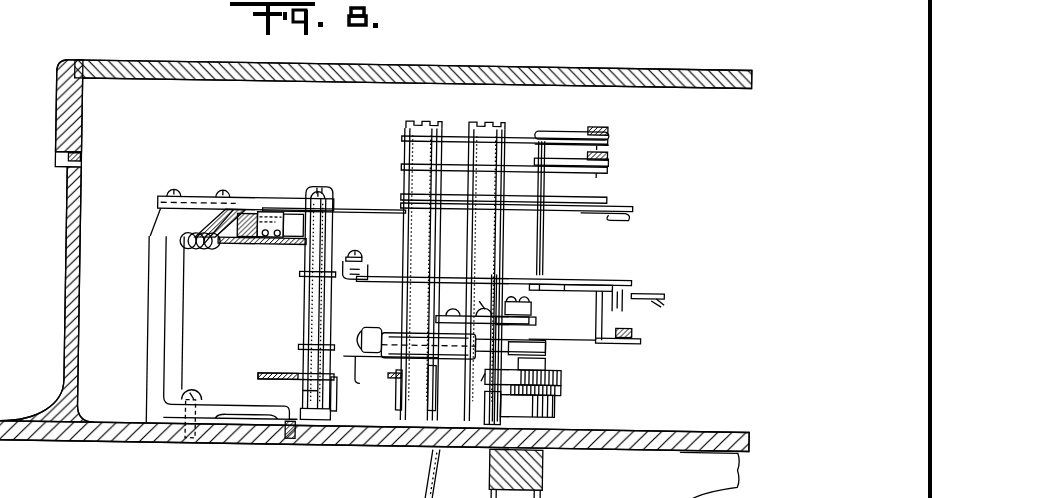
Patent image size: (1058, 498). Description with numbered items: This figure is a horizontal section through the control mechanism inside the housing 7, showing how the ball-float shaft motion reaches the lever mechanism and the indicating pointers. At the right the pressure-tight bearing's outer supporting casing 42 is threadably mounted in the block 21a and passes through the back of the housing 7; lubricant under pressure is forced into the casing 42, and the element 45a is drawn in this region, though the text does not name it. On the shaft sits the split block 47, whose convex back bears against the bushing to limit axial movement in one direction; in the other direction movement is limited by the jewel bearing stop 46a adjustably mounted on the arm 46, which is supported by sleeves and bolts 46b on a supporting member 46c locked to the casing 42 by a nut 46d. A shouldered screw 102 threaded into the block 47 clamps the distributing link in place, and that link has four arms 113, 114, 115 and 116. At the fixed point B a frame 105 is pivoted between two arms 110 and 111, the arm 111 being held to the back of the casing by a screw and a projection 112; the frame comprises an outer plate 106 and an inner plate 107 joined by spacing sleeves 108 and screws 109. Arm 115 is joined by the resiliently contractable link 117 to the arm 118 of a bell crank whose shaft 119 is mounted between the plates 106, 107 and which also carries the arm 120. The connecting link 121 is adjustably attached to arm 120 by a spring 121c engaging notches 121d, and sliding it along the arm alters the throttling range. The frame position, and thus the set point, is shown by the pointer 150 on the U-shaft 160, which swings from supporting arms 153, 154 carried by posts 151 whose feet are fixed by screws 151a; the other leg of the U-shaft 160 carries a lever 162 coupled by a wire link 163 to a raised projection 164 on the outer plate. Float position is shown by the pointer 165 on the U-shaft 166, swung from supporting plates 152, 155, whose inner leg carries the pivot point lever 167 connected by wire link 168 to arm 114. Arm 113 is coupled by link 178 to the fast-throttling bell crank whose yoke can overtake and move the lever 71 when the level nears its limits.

The housing 7 is at (127, 446).
The block 21a is at (432, 479).
The outer supporting casing 42 is at (557, 405).
The contact screw 45a is at (533, 300).
The arm 46 is at (451, 315).
The jewel bearing stop 46a is at (487, 374).
The bolts 46b is at (496, 300).
The supporting member 46c is at (563, 389).
The nut 46d is at (563, 377).
The split block 47 is at (547, 362).
The lever 71 is at (389, 380).
The screw 102 is at (537, 320).
The frame 105 is at (228, 252).
The outer plate 106 is at (287, 242).
The inner plate 107 is at (276, 373).
The spacing sleeves 108 is at (300, 277).
The screws 109 is at (315, 188).
The arm 110 is at (258, 200).
The arm 111 is at (211, 402).
The projection 112 is at (294, 441).
The arm 113 is at (636, 341).
The arm 114 is at (619, 308).
The arm 115 is at (547, 347).
The arm 116 is at (401, 333).
The resilient link 117 is at (372, 332).
The arm 118 is at (300, 349).
The shaft 119 is at (308, 310).
The arm 120 is at (630, 277).
The connecting link 121 is at (363, 256).
The spring 121c is at (365, 268).
The notches 121d is at (576, 279).
The pointer 150 is at (606, 153).
The posts 151 is at (403, 152).
The screws 151a is at (416, 121).
The supporting plate 152 is at (453, 136).
The supporting arm 153 is at (400, 168).
The supporting arm 154 is at (400, 196).
The supporting plate 155 is at (541, 284).
The U-shaft 160 is at (536, 148).
The lever 162 is at (628, 204).
The wire link 163 is at (358, 214).
The raised projection 164 is at (253, 242).
The pointer 165 is at (606, 126).
The U-shaft 166 is at (560, 129).
The pivot point lever 167 is at (665, 293).
The wire link 168 is at (663, 304).
The link 178 is at (635, 330).
The fixed point B is at (305, 392).